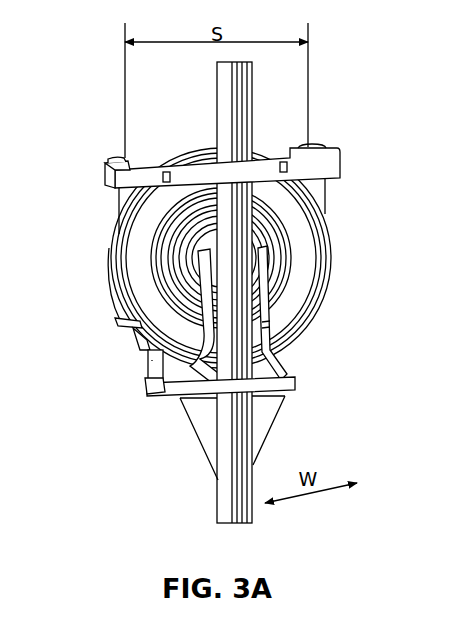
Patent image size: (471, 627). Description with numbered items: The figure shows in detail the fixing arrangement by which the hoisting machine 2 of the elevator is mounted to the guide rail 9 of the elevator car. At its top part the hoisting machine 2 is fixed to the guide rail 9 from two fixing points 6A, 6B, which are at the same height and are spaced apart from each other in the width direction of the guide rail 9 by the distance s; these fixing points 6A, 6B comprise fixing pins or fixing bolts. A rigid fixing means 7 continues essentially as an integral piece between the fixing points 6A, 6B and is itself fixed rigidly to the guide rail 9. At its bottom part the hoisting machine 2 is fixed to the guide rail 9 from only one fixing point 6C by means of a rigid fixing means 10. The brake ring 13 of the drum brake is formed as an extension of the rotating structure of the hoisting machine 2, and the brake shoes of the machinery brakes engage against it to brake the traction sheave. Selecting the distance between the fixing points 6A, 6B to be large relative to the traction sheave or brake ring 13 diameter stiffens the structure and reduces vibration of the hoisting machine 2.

The hoisting machine 2 is at (315, 317).
The rigid fixing means 7 is at (302, 172).
The fixing point 6A is at (114, 161).
The fixing point 6B is at (306, 148).
The fixing point 6C is at (163, 393).
The brake ring 13 is at (118, 328).
The rigid fixing means 10 is at (263, 423).
The guide rail 9 is at (218, 505).